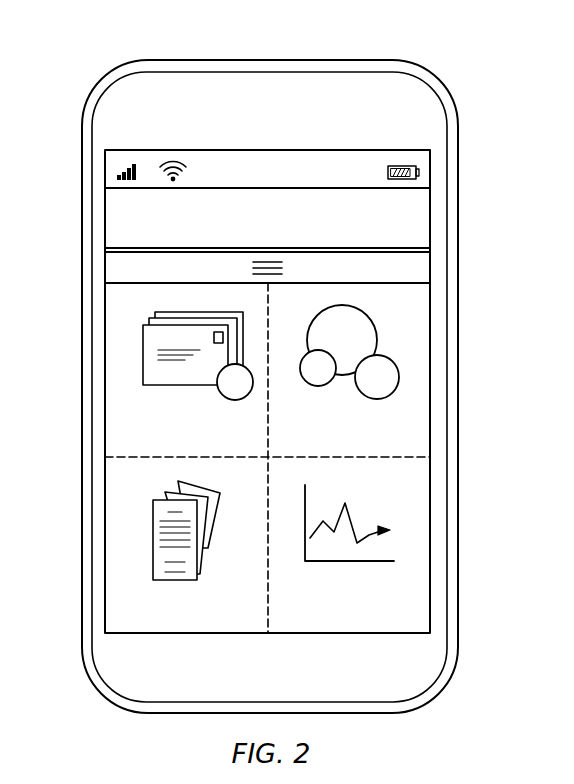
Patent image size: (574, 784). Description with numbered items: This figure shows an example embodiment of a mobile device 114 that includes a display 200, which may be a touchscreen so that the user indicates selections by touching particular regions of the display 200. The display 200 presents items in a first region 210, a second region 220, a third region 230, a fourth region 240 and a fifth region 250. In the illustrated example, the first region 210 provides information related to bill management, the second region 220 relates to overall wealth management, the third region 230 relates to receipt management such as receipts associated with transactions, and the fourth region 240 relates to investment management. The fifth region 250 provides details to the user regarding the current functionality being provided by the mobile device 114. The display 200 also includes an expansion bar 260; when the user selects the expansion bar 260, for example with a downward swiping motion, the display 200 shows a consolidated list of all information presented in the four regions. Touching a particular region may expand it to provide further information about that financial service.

The mobile device 114 is at (255, 38).
The display 200 is at (116, 620).
The first region 210 is at (125, 315).
The second region 220 is at (412, 335).
The third region 230 is at (145, 542).
The fourth region 240 is at (412, 503).
The fifth region 250 is at (412, 220).
The expansion bar 260 is at (412, 268).